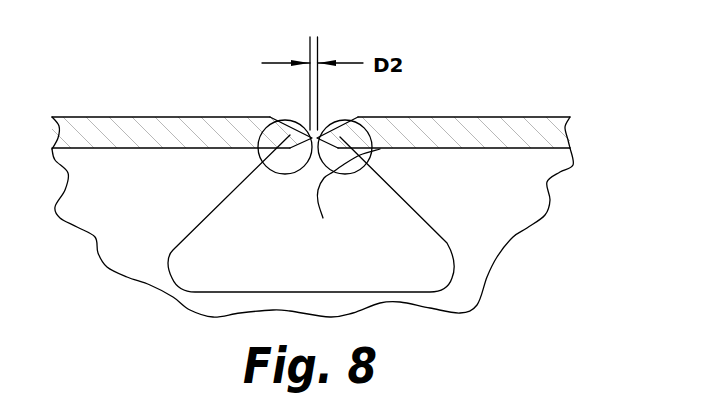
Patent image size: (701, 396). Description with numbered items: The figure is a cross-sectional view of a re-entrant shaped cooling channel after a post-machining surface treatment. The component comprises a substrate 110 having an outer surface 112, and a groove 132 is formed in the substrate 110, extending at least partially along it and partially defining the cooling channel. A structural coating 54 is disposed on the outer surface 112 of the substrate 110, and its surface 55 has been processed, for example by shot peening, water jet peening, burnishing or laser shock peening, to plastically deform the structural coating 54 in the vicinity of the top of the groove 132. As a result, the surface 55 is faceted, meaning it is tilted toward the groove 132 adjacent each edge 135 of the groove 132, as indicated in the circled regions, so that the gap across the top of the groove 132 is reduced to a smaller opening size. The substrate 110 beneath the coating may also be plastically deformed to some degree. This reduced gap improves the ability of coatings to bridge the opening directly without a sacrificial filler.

The structural coating 54 is at (172, 135).
The surface 55 is at (210, 115).
The substrate 110 is at (482, 207).
The outer surface 112 is at (121, 146).
The groove 132 is at (210, 255).
The edge 135 is at (250, 149).